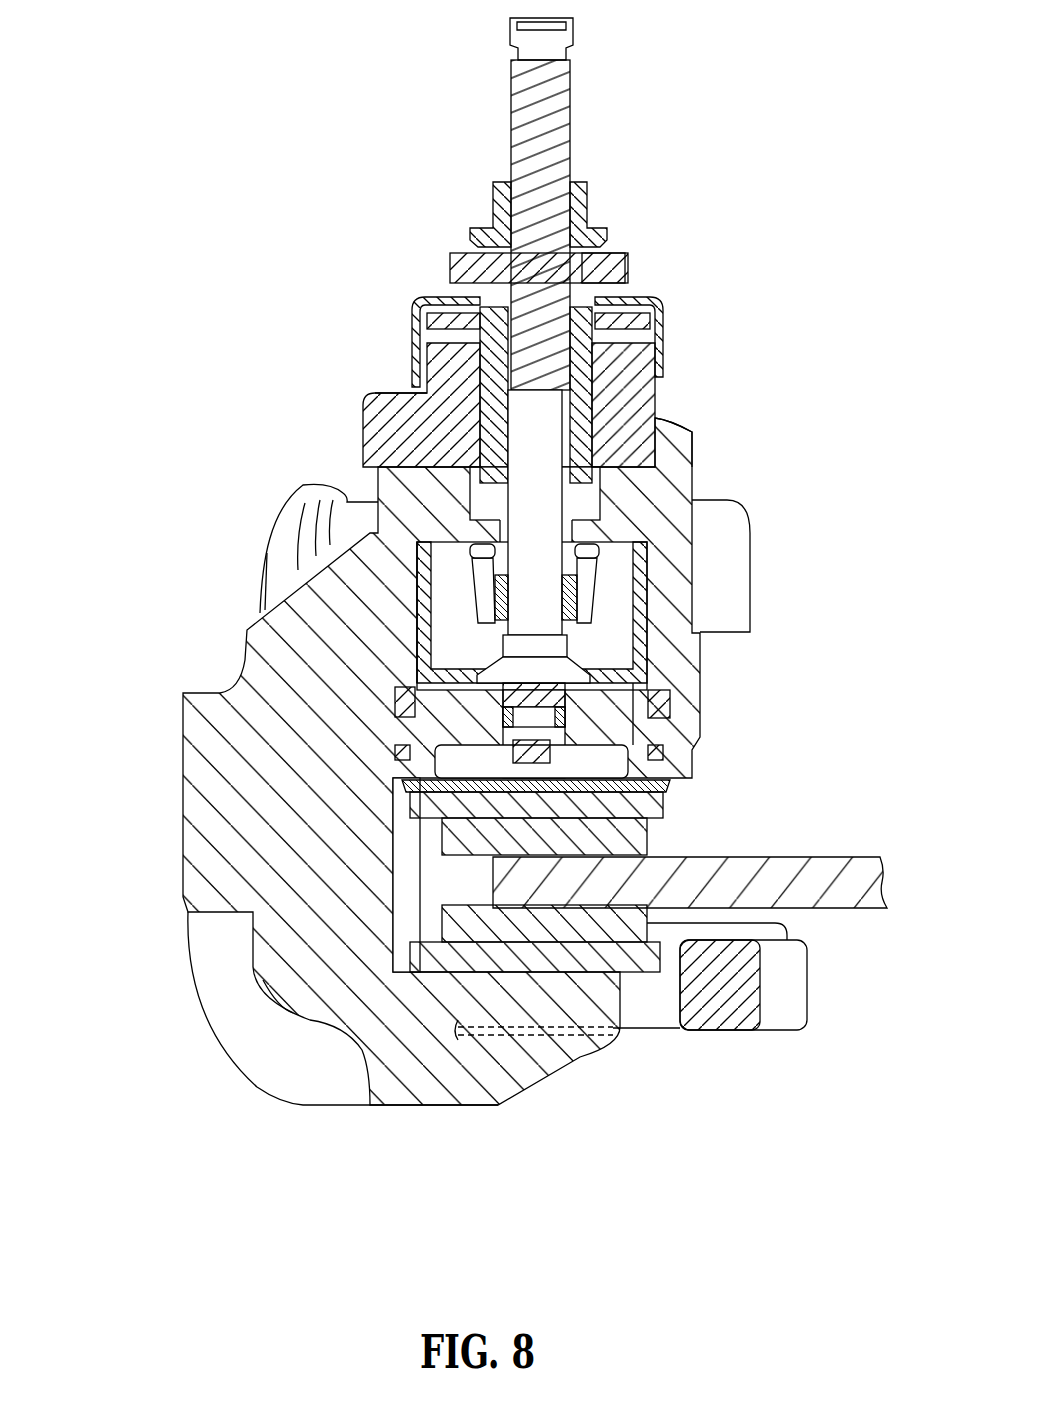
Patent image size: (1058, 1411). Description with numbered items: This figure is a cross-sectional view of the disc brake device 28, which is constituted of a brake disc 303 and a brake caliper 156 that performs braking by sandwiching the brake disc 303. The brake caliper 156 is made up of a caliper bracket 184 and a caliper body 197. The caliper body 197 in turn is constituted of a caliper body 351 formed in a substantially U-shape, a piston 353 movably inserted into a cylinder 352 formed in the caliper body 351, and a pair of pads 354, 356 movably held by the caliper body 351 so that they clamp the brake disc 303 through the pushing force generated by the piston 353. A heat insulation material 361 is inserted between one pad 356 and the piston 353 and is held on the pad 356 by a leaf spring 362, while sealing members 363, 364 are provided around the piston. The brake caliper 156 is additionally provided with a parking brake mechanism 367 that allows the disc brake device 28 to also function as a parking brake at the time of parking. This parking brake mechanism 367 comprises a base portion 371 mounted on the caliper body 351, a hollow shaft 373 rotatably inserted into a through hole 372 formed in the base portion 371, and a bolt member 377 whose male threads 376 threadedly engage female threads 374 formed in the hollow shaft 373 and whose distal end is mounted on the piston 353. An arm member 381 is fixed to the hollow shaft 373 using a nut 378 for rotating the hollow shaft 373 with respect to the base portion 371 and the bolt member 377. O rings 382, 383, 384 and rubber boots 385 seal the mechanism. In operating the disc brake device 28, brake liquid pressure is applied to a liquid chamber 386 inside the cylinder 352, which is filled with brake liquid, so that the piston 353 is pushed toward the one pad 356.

The disc brake device 28 is at (242, 620).
The brake caliper 156 is at (303, 1105).
The caliper bracket 184 is at (720, 1013).
The caliper body 197 is at (395, 1105).
The brake disc 303 is at (867, 867).
The caliper body 351 is at (203, 818).
The cylinder 352 is at (650, 602).
The piston 353 is at (630, 727).
The pad 354 is at (557, 965).
The pad 356 is at (638, 840).
The heat insulation material 361 is at (657, 830).
The leaf spring 362 is at (670, 783).
The sealing member 363 is at (670, 757).
The sealing member 364 is at (673, 705).
The parking brake mechanism 367 is at (663, 297).
The base portion 371 is at (368, 428).
The through hole 372 is at (395, 400).
The hollow shaft 373 is at (487, 375).
The female threads 374 is at (470, 245).
The male threads 376 is at (507, 140).
The bolt member 377 is at (572, 88).
The nut 378 is at (592, 198).
The arm member 381 is at (627, 262).
The O ring 382 is at (577, 705).
The O ring 383 is at (630, 588).
The O ring 384 is at (683, 418).
The rubber boots 385 is at (660, 327).
The liquid chamber 386 is at (605, 647).